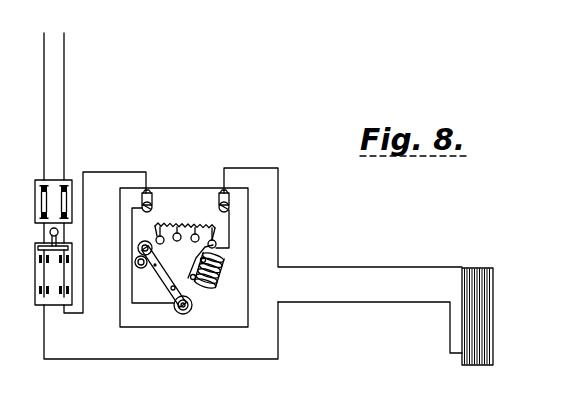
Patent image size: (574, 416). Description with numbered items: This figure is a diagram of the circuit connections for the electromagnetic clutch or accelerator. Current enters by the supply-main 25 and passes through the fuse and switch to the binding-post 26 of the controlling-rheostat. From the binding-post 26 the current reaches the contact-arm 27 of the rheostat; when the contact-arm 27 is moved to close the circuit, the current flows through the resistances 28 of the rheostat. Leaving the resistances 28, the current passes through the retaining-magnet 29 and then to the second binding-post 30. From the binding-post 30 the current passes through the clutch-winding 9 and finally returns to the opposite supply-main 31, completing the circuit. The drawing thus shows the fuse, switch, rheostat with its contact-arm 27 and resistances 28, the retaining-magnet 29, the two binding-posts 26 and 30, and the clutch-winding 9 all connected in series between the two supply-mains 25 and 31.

The clutch-winding 9 is at (481, 311).
The supply-main 25 is at (64, 124).
The binding-post 26 is at (150, 194).
The contact-arm 27 is at (167, 283).
The resistances 28 is at (181, 226).
The retaining-magnet 29 is at (224, 282).
The binding-post 30 is at (220, 195).
The supply-main 31 is at (44, 140).